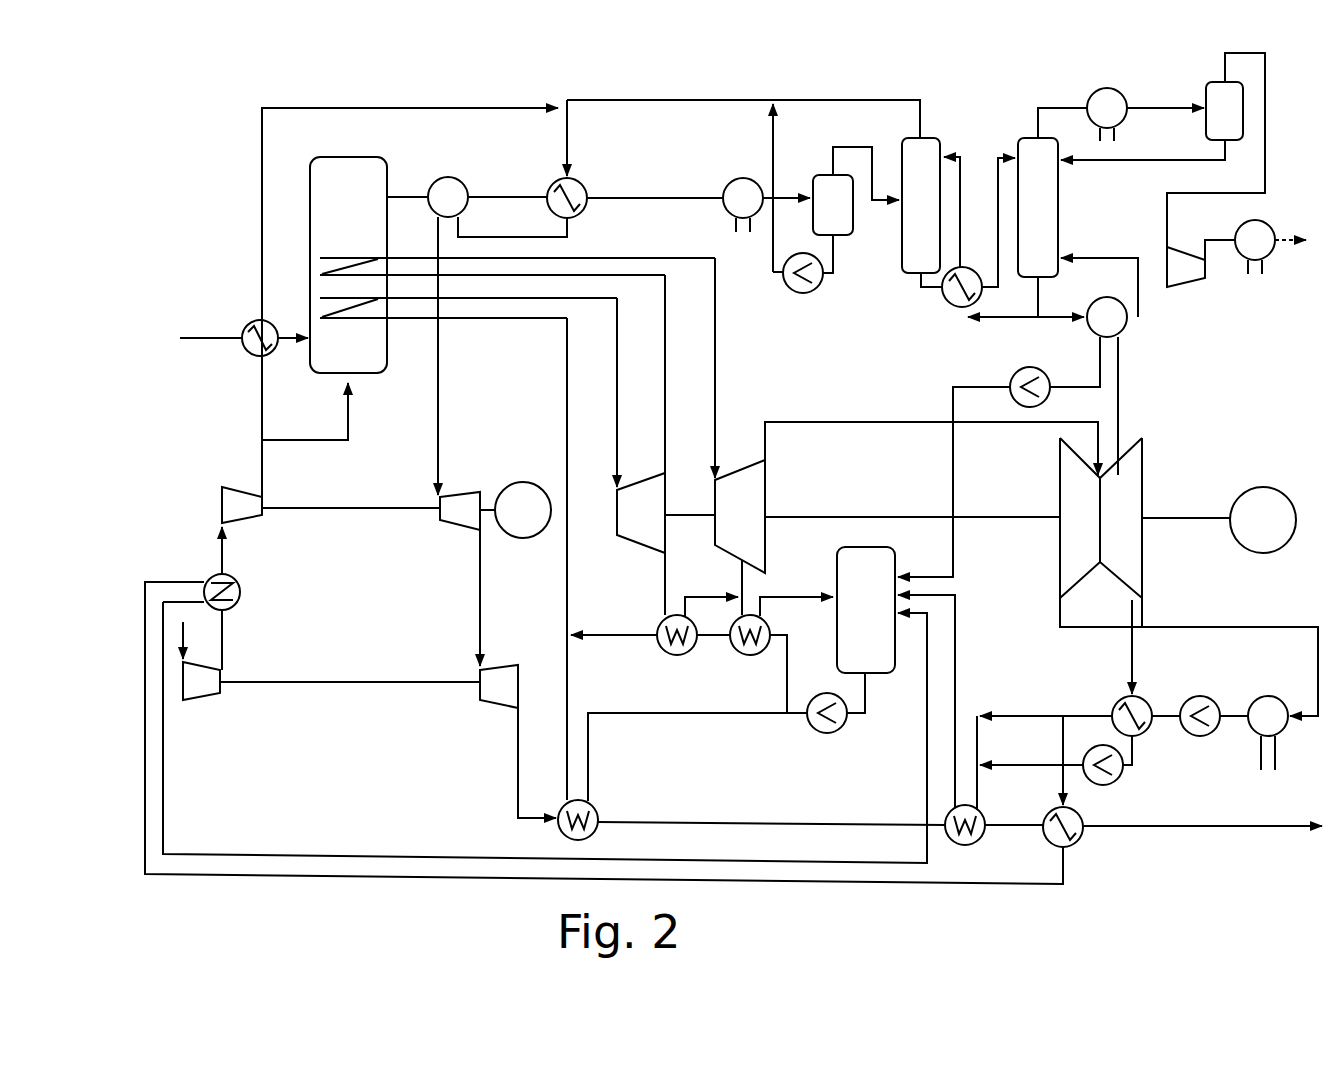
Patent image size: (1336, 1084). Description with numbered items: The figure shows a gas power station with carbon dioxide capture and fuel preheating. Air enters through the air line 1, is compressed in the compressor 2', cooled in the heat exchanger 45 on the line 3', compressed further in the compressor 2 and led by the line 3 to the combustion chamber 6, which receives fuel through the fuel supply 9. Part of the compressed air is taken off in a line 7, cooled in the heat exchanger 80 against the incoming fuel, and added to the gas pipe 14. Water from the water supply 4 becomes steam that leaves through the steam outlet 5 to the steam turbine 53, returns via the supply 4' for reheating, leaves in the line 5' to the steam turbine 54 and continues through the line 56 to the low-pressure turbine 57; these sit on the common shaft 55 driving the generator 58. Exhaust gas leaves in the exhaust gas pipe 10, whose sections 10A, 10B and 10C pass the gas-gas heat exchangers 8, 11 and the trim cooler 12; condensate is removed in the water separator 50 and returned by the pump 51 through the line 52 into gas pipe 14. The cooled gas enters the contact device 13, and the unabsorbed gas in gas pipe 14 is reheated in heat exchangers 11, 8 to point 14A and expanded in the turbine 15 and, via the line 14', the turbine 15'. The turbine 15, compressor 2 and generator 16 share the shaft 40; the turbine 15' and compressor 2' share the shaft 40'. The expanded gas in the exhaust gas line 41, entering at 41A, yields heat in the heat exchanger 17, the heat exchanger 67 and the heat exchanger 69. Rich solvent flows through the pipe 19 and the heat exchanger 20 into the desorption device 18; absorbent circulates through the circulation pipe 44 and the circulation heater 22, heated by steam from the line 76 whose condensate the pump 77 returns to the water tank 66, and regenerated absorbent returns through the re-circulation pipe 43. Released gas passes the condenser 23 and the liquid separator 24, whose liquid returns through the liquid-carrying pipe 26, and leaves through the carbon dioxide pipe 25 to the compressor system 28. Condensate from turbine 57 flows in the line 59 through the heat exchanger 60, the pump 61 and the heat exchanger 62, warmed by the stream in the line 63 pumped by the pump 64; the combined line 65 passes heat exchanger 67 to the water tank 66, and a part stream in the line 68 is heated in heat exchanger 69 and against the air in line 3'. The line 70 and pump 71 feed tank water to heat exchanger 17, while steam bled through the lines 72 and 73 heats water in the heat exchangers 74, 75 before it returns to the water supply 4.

The air line 1 is at (185, 634).
The compressor 2 is at (242, 505).
The compressor 2' is at (229, 724).
The line 3 is at (305, 411).
The line 3' is at (186, 533).
The water supply 4 is at (525, 559).
The supply 4' is at (708, 368).
The steam outlet 5 is at (550, 392).
The line 5' is at (733, 374).
The combustion chamber 6 is at (512, 265).
The line 7 is at (257, 212).
The gas-gas heat exchanger 8 is at (458, 178).
The fuel supply 9 is at (200, 338).
The exhaust gas pipe 10 is at (670, 203).
The exhaust gas stream section 10A is at (410, 197).
The exhaust gas stream section 10B is at (523, 193).
The exhaust gas stream section 10C is at (627, 196).
The gas-gas heat exchanger 11 is at (550, 180).
The trim cooler 12 is at (735, 180).
The contact device 13 is at (922, 212).
The gas pipe 14 is at (743, 123).
The heated cleaned gas stream 14A is at (441, 350).
The line 14' is at (440, 598).
The turbine 15 is at (460, 511).
The turbine 15' is at (499, 686).
The generator 16 is at (515, 510).
The heat exchanger 17 is at (597, 812).
The desorption device 18 is at (1052, 212).
The pipe 19 is at (998, 160).
The heat exchanger 20 is at (955, 306).
The circulation heater 22 is at (1128, 333).
The condenser 23 is at (1127, 119).
The liquid separator 24 is at (1224, 111).
The CO2 pipe 25 is at (1265, 128).
The liquid-carrying pipe 26 is at (1120, 163).
The compressor system 28 is at (1250, 326).
The shaft 40 is at (351, 489).
The common shaft 40' is at (350, 662).
The exhaust gas line 41 is at (1247, 829).
The exhaust gas stream section 41A is at (520, 745).
The re-circulation pipe 43 is at (968, 153).
The circulation pipe 44 is at (1112, 253).
The heat exchanger 45 is at (242, 592).
The water separator 50 is at (856, 191).
The pump 51 is at (803, 294).
The line 52 is at (772, 147).
The steam turbine 53 is at (666, 513).
The steam turbine 54 is at (740, 516).
The common shaft 55 is at (847, 481).
The line 56 is at (887, 420).
The low-pressure turbine 57 is at (1101, 532).
The generator 58 is at (1263, 520).
The line 59 is at (1247, 625).
The heat exchanger 60 is at (1292, 698).
The pump 61 is at (1225, 698).
The heat exchanger 62 is at (1145, 736).
The line 63 is at (1125, 658).
The pump 64 is at (1110, 786).
The line 65 is at (958, 648).
The water tank 66 is at (866, 630).
The heat exchanger 67 is at (972, 841).
The line 68 is at (424, 874).
The heat exchanger 69 is at (1078, 846).
The line 70 is at (866, 703).
The pump 71 is at (822, 733).
The line 72 is at (665, 593).
The line 73 is at (742, 573).
The heat exchanger 74 is at (675, 656).
The heater 75 is at (752, 656).
The line 76 is at (1120, 418).
The pump 77 is at (1043, 341).
The heat exchanger 80 is at (254, 370).